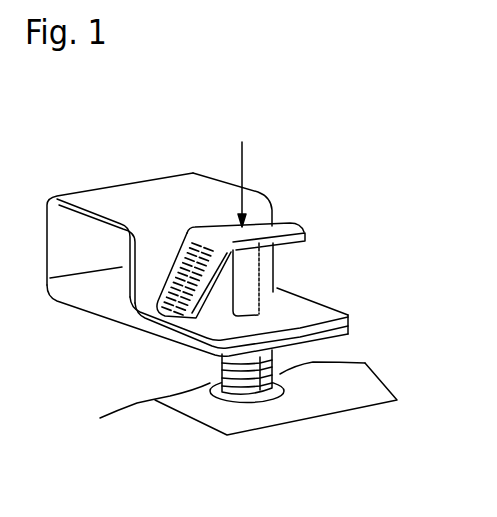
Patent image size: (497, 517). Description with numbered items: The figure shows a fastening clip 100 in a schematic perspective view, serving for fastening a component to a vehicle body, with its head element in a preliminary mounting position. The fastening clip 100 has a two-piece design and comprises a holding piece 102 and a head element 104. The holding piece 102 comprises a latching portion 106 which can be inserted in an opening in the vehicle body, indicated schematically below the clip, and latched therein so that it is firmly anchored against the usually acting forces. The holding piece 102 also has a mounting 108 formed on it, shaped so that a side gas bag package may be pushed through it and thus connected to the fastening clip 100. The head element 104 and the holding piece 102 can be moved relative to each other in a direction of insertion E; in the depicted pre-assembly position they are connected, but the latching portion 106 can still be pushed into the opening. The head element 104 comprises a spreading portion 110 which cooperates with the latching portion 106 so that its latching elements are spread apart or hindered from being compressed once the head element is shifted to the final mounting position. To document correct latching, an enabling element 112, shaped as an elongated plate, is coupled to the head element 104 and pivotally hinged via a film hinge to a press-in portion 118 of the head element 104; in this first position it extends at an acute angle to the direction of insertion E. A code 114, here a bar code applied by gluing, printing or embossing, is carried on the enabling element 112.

The fastening clip 100 is at (332, 158).
The holding piece 102 is at (90, 313).
The head element 104 is at (259, 274).
The latching portion 106 is at (263, 389).
The mounting 108 is at (69, 229).
The spreading portion 110 is at (250, 297).
The enabling element 112 is at (177, 257).
The code 114 is at (178, 305).
The press-in portion 118 is at (273, 228).